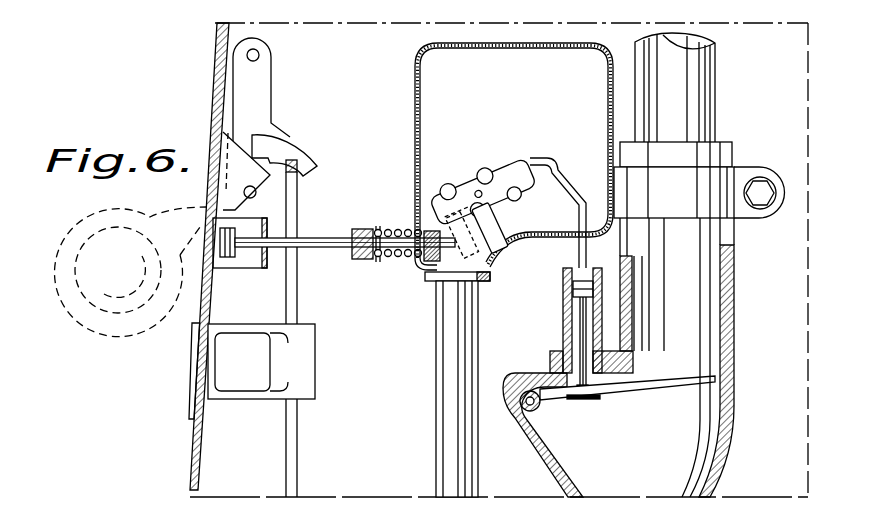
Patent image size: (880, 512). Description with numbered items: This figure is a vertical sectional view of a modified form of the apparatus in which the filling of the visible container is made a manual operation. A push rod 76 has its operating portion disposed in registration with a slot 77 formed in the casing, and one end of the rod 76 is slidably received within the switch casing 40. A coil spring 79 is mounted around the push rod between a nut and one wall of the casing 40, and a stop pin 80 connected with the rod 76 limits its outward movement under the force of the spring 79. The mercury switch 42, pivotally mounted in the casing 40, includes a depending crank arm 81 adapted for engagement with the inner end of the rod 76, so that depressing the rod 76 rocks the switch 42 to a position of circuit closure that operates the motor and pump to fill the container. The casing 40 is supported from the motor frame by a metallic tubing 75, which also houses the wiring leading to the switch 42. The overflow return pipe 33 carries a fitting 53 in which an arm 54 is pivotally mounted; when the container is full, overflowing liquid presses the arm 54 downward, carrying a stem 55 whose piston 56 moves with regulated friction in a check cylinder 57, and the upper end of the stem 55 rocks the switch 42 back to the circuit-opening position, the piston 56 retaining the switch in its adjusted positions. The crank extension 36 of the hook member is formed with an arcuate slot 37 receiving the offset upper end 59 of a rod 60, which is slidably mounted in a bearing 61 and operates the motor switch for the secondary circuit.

The overflow return pipe 33 is at (707, 88).
The crank extension 36 is at (262, 93).
The arcuate slot 37 is at (277, 146).
The switch casing 40 is at (413, 148).
The mercury switch 42 is at (475, 181).
The fitting 53 is at (734, 301).
The arm 54 is at (630, 386).
The stem 55 is at (565, 336).
The piston 56 is at (572, 299).
The check cylinder 57 is at (565, 281).
The offset upper end 59 is at (297, 163).
The rod 60 is at (298, 304).
The bearing 61 is at (305, 359).
The metallic tubing 75 is at (437, 386).
The push rod 76 is at (312, 236).
The slot 77 is at (216, 249).
The coil spring 79 is at (404, 230).
The stop pin 80 is at (418, 266).
The depending crank arm 81 is at (500, 224).